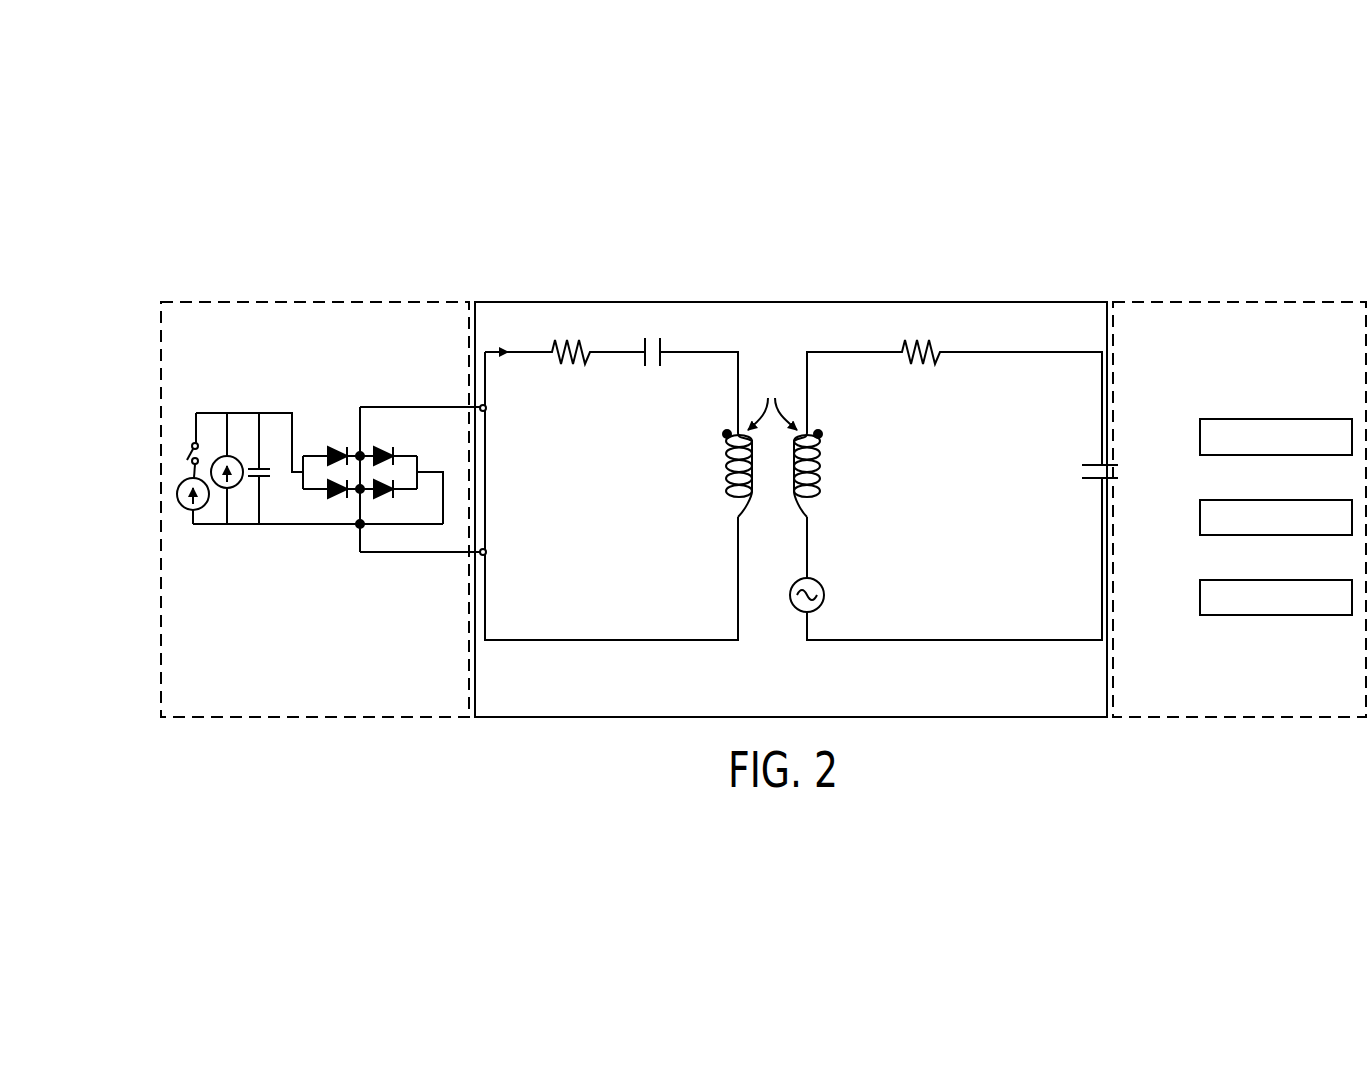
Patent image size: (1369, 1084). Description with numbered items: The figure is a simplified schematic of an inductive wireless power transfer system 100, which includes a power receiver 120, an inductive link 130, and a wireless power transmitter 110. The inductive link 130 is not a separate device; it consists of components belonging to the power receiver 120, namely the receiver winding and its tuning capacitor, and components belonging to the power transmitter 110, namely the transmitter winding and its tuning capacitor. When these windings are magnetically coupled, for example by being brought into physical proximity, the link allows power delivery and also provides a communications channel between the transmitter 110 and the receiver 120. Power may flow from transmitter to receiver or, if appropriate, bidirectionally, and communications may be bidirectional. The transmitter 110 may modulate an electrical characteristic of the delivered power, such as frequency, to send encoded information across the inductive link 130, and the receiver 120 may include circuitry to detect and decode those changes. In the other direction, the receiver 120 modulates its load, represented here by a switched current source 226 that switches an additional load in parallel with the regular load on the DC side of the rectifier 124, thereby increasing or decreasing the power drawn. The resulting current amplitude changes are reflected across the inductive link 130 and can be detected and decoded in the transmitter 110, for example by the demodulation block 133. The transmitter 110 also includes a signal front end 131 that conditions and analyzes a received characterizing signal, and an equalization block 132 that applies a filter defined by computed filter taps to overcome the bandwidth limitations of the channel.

The wireless power transfer system 100 is at (946, 250).
The wireless power transmitter 110 is at (1240, 302).
The power receiver 120 is at (318, 302).
The rectifier 124 is at (333, 450).
The inductive link 130 is at (793, 302).
The signal front end 131 is at (1240, 419).
The equalization block 132 is at (1240, 500).
The demodulation block 133 is at (1240, 580).
The switched current source 226 is at (187, 433).